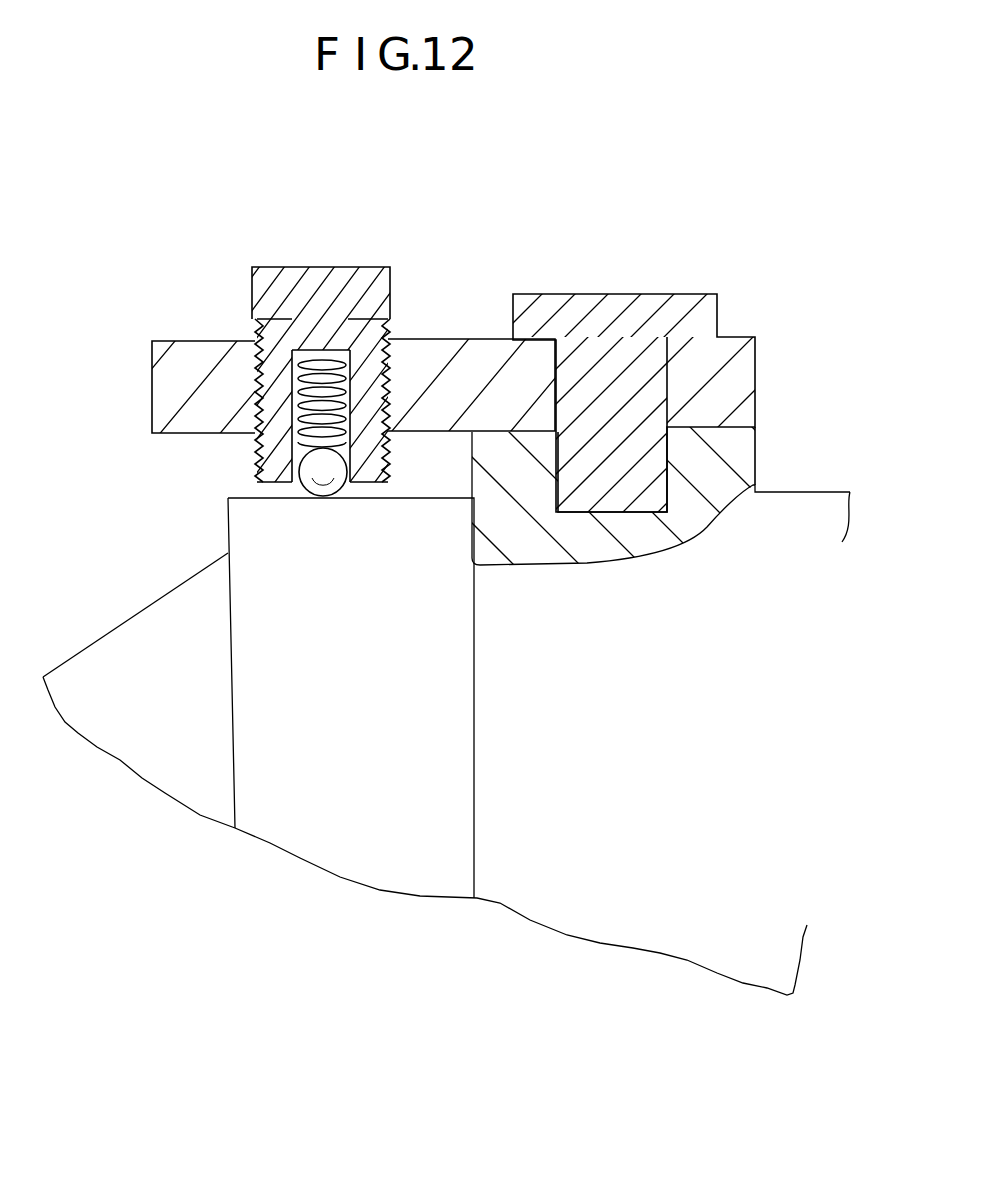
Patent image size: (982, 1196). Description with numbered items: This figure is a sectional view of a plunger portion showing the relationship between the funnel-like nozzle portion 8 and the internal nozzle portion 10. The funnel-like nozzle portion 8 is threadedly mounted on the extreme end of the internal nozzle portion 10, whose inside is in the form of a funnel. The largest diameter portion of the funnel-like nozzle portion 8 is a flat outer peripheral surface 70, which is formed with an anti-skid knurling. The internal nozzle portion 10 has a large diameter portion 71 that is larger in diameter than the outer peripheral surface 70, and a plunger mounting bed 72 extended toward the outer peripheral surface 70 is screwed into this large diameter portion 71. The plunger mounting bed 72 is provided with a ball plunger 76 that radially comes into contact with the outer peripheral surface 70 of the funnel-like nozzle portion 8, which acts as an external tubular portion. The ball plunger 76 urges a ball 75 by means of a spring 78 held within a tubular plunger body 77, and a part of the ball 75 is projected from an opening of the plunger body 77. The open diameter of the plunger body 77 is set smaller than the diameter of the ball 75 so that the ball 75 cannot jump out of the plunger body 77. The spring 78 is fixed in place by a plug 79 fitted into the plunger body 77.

The funnel-like nozzle portion 8 is at (122, 622).
The internal nozzle portion 10 is at (777, 537).
The outer peripheral surface 70 is at (273, 565).
The large diameter portion 71 is at (715, 443).
The plunger mounting bed 72 is at (470, 360).
The ball 75 is at (313, 470).
The ball plunger 76 is at (317, 330).
The plunger body 77 is at (375, 333).
The spring 78 is at (295, 382).
The plug 79 is at (345, 283).